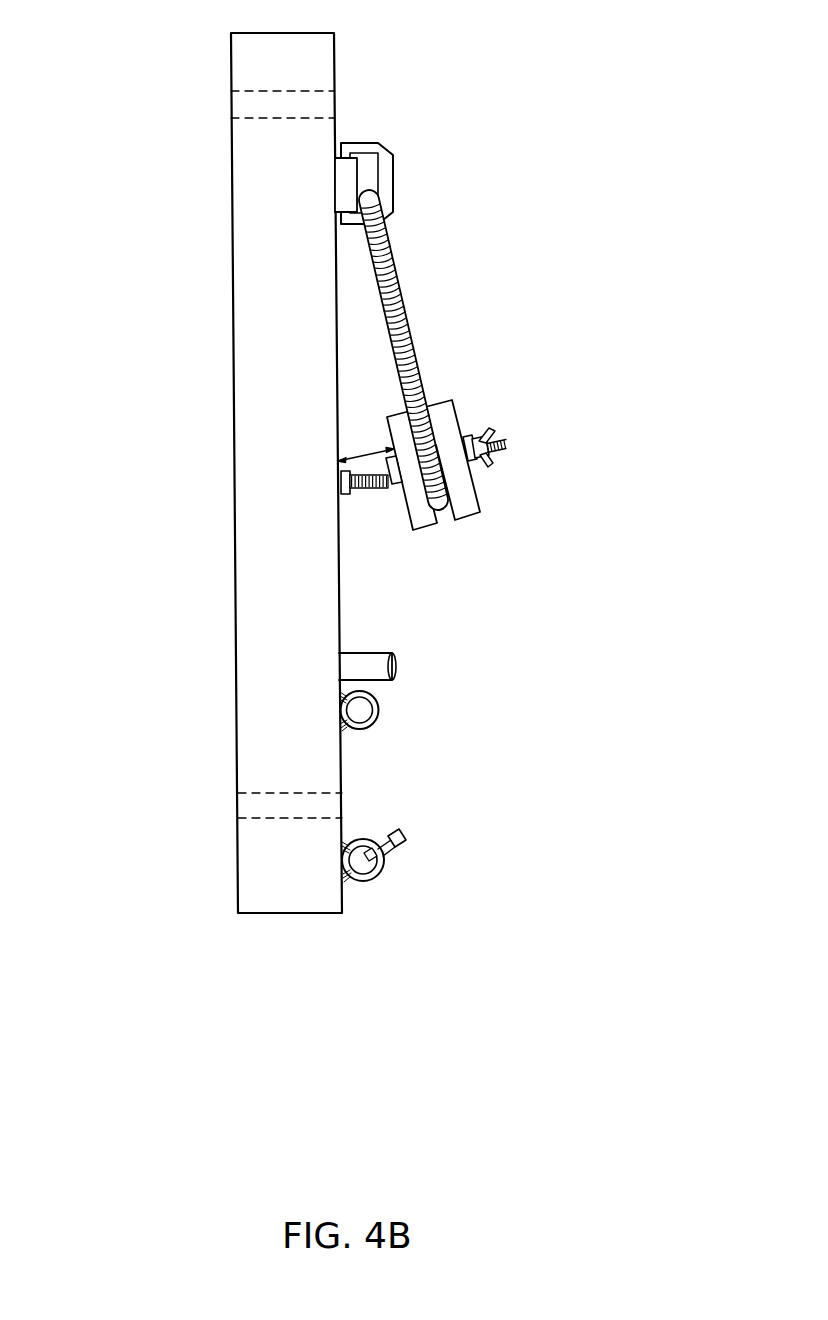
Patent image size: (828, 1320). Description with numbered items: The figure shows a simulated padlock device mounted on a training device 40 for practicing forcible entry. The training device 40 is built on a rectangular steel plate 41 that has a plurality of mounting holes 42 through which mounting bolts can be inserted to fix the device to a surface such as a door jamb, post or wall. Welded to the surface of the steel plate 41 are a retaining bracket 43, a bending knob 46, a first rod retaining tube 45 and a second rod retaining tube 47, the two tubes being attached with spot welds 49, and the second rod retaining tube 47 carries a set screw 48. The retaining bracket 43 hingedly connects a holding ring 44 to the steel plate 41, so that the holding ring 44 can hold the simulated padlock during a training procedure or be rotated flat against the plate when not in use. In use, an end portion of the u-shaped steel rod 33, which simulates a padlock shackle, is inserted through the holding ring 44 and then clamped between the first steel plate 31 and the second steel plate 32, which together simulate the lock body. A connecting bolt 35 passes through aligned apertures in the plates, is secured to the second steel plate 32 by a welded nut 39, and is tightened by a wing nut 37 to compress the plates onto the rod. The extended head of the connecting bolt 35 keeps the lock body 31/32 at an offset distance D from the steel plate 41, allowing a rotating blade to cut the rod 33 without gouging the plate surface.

The training device 40 is at (280, 473).
The rectangular steel plate 41 is at (317, 67).
The mounting holes 42 is at (240, 112).
The retaining bracket 43 is at (347, 182).
The holding ring 44 is at (393, 184).
The u-shaped steel rod 33 is at (407, 327).
The second steel plate 32 is at (387, 420).
The first steel plate 31 is at (464, 446).
The connecting bolt 35 is at (392, 521).
The nut 39 is at (393, 484).
The wing nut 37 is at (500, 453).
The distance D is at (366, 445).
The bending knob 46 is at (358, 665).
The first rod retaining tube 45 is at (365, 712).
The spot welds 49 is at (345, 730).
The second rod retaining tube 47 is at (387, 865).
The set screw 48 is at (405, 830).